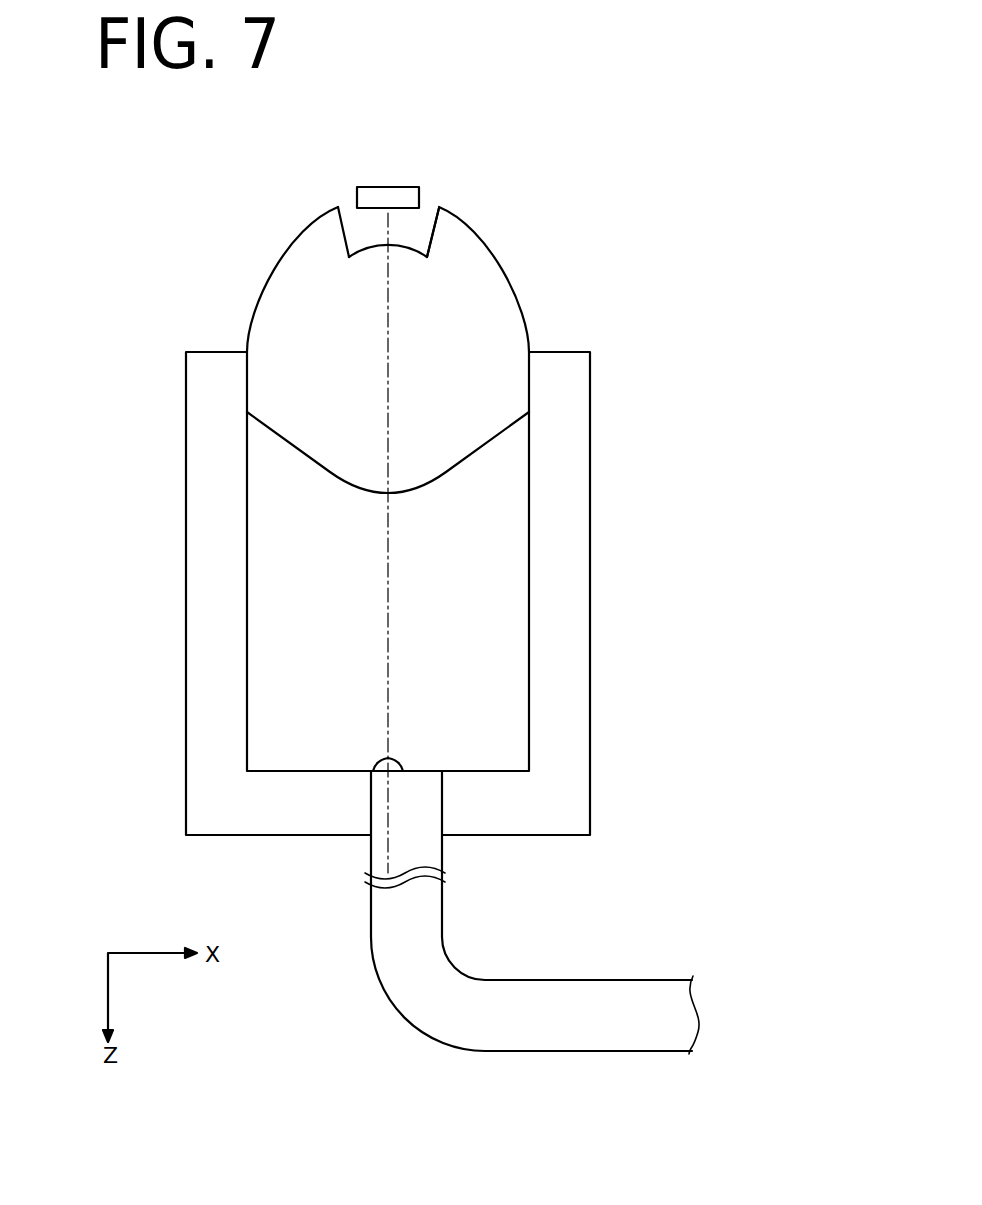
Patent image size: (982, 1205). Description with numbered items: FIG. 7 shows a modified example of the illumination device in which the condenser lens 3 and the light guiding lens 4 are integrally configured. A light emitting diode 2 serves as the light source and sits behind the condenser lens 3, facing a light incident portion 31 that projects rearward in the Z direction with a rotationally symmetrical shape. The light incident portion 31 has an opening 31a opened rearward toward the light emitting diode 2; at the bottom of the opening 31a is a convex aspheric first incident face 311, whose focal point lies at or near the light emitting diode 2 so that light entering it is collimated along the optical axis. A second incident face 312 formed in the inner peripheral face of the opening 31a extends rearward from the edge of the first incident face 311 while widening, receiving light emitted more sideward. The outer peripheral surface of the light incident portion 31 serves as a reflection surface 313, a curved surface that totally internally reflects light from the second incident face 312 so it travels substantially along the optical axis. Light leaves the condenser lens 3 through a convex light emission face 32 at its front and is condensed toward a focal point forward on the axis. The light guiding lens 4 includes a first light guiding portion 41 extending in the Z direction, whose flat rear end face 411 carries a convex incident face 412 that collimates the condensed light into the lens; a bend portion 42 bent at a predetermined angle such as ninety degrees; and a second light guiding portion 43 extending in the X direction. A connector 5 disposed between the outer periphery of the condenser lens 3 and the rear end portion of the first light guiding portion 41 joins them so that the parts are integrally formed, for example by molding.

The light emitting diode 2 is at (374, 187).
The condenser lens 3 is at (382, 456).
The light incident portion 31 is at (382, 247).
The opening 31a is at (418, 222).
The first incident face 311 is at (367, 245).
The second incident face 312 is at (460, 214).
The reflection surface 313 is at (283, 275).
The light emission face 32 is at (462, 467).
The light guiding lens 4 is at (507, 912).
The first light guiding portion 41 is at (393, 827).
The rear end face 411 is at (430, 769).
The incident face 412 is at (378, 763).
The bend portion 42 is at (390, 997).
The second light guiding portion 43 is at (597, 1051).
The connector 5 is at (185, 538).